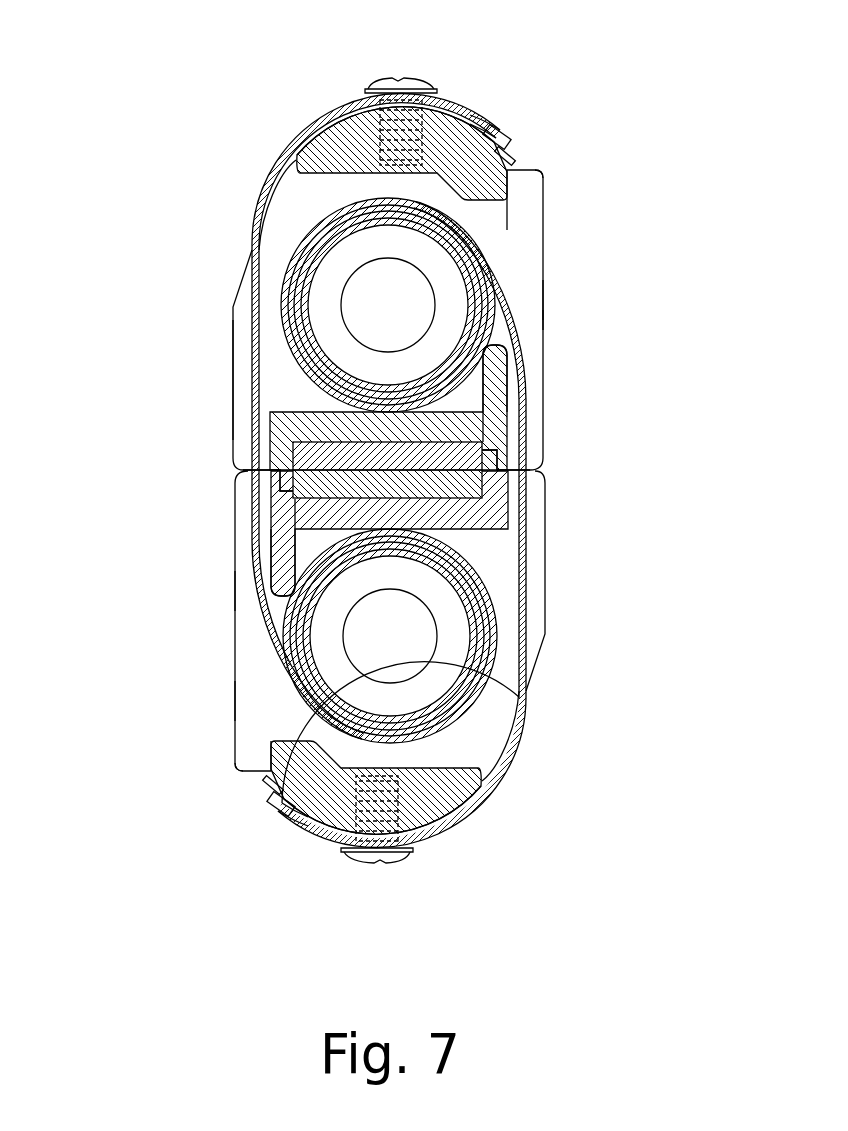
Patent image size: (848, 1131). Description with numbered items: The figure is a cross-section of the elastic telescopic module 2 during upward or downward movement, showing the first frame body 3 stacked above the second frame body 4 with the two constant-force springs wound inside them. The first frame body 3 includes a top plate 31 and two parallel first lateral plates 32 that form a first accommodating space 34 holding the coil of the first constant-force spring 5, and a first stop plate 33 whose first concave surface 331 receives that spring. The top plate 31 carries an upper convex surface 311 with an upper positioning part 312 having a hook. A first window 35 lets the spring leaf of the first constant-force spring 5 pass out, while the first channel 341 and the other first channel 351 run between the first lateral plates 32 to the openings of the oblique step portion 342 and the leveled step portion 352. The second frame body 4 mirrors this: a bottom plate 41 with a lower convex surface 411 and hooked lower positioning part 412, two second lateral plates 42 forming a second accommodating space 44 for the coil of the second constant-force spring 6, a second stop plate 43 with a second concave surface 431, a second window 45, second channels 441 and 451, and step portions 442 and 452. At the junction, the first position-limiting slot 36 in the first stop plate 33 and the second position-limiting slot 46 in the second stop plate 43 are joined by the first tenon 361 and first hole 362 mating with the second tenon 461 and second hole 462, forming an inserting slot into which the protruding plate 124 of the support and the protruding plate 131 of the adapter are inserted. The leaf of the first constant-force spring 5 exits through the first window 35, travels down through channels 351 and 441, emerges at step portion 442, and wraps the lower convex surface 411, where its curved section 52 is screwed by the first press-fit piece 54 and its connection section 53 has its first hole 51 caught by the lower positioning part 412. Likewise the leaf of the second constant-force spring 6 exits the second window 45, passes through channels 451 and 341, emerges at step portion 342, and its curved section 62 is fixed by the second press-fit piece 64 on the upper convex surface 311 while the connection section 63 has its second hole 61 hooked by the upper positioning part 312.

The elastic telescopic module 2 is at (628, 112).
The first frame body 3 is at (556, 256).
The second frame body 4 is at (556, 551).
The first constant-force spring 5 is at (292, 292).
The second constant-force spring 6 is at (490, 657).
The top plate 31 is at (436, 132).
The upper convex surface 311 is at (343, 110).
The upper positioning part 312 is at (512, 152).
The first lateral plate 32 is at (538, 298).
The first stop plate 33 is at (493, 373).
The first concave surface 331 is at (482, 440).
The first accommodating space 34 is at (272, 357).
The first channel 341 is at (237, 328).
The step portion 342 is at (276, 197).
The first window 35 is at (510, 225).
The first channel 351 is at (540, 320).
The step portion 352 is at (546, 178).
The first position-limiting slot 36 is at (275, 410).
The first tenon 361 is at (270, 482).
The first hole 362 is at (502, 455).
The bottom plate 41 is at (425, 815).
The lower convex surface 411 is at (485, 780).
The lower positioning part 412 is at (272, 808).
The second lateral plate 42 is at (233, 622).
The second stop plate 43 is at (287, 545).
The second concave surface 431 is at (300, 550).
The second accommodating space 44 is at (333, 189).
The second channel 441 is at (545, 600).
The step portion 442 is at (537, 720).
The second window 45 is at (270, 700).
The second channel 451 is at (240, 582).
The step portion 452 is at (242, 768).
The second position-limiting slot 46 is at (300, 520).
The second tenon 461 is at (502, 455).
The second hole 462 is at (270, 482).
The first hole 51 is at (292, 834).
The curved section 52 is at (470, 797).
The connection section 53 is at (266, 800).
The first press-fit piece 54 is at (388, 858).
The second hole 61 is at (503, 122).
The curved section 62 is at (310, 120).
The connection section 63 is at (492, 127).
The second press-fit piece 64 is at (383, 80).
The protruding plate 124 is at (495, 437).
The protruding plate 131 is at (462, 490).